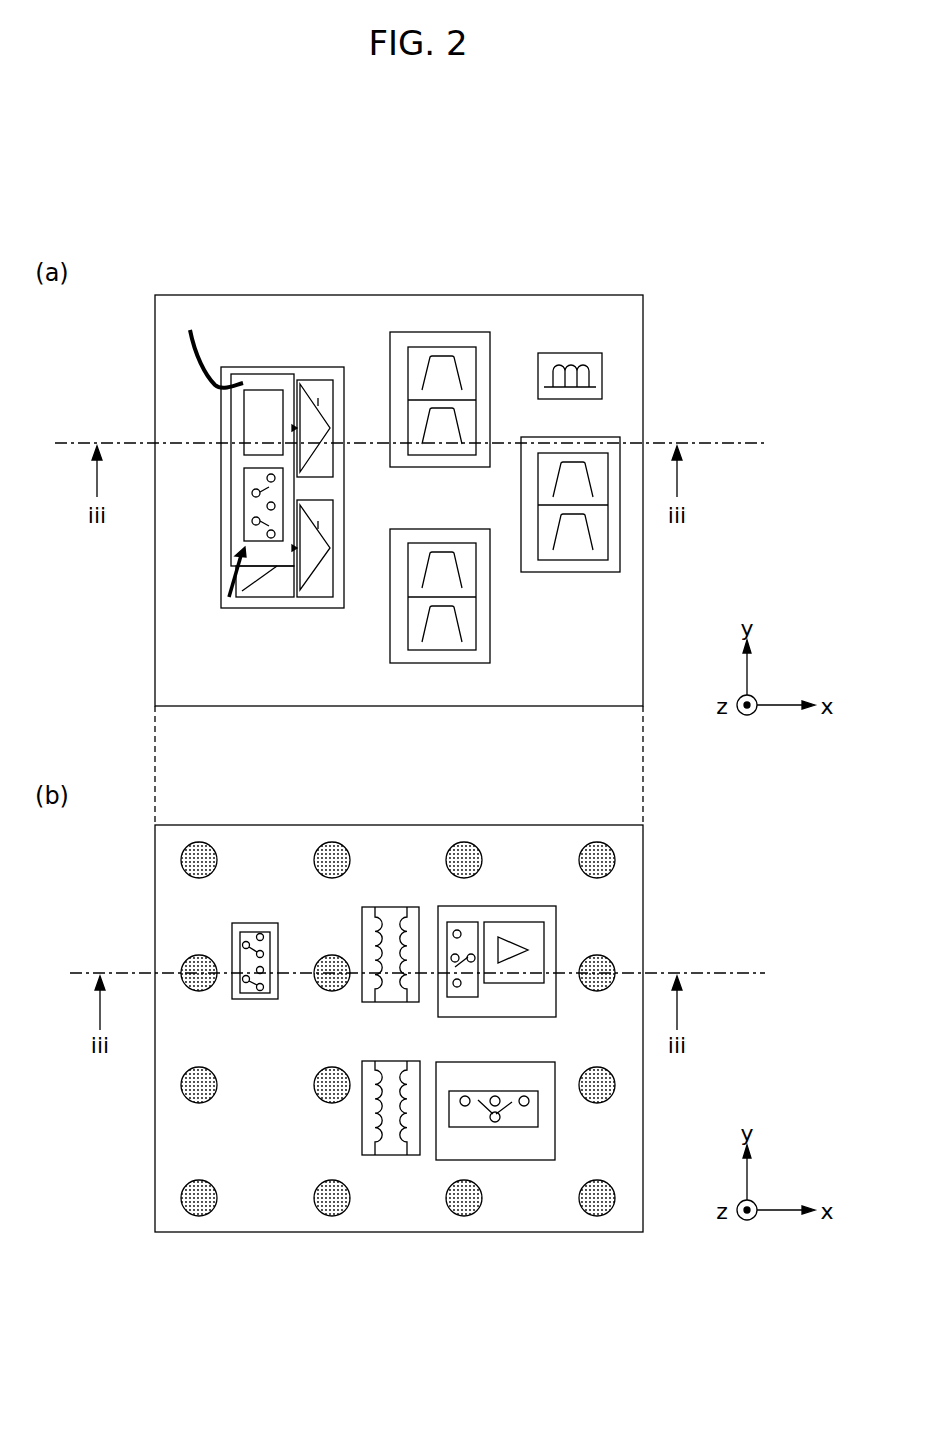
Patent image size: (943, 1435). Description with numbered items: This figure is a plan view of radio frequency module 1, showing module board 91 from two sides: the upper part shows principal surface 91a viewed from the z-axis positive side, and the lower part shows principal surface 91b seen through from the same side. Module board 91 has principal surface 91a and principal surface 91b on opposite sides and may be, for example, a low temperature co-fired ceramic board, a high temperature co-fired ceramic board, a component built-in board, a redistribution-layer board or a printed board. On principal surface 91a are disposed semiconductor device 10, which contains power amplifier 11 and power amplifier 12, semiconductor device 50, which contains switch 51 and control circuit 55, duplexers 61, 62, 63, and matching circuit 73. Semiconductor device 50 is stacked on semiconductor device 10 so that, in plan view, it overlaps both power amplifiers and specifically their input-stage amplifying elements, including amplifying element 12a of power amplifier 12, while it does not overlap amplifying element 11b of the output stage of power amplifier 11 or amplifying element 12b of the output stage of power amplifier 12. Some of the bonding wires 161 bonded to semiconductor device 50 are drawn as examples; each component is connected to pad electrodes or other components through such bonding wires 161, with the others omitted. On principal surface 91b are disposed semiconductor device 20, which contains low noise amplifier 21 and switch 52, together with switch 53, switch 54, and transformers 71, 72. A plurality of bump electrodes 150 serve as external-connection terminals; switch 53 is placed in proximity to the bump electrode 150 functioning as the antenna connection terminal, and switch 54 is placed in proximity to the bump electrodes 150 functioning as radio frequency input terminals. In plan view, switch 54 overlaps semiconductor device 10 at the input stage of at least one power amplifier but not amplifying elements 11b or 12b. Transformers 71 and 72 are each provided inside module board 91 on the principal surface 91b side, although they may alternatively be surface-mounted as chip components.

The radio frequency module 1 is at (733, 306).
The semiconductor device 10 is at (276, 366).
The power amplifier 11 is at (310, 381).
The amplifying element 11b is at (318, 402).
The power amplifier 12 is at (320, 597).
The amplifying element 12a is at (257, 595).
The amplifying element 12b is at (318, 525).
The semiconductor device 20 is at (487, 906).
The low noise amplifier 21 is at (530, 922).
The semiconductor device 50 is at (253, 373).
The switch 51 is at (243, 505).
The switch 52 is at (460, 922).
The switch 53 is at (497, 1062).
The switch 54 is at (250, 924).
The control circuit 55 is at (243, 406).
The duplexer 61 is at (492, 387).
The duplexer 62 is at (492, 637).
The duplexer 63 is at (570, 573).
The transformer 71 is at (388, 907).
The transformer 72 is at (390, 1061).
The matching circuit 73 is at (568, 353).
The module board 91 is at (535, 295).
The principal surface 91a is at (628, 325).
The principal surface 91b is at (632, 846).
The bump electrode 150 is at (199, 1216).
The bonding wire 161 is at (207, 369).